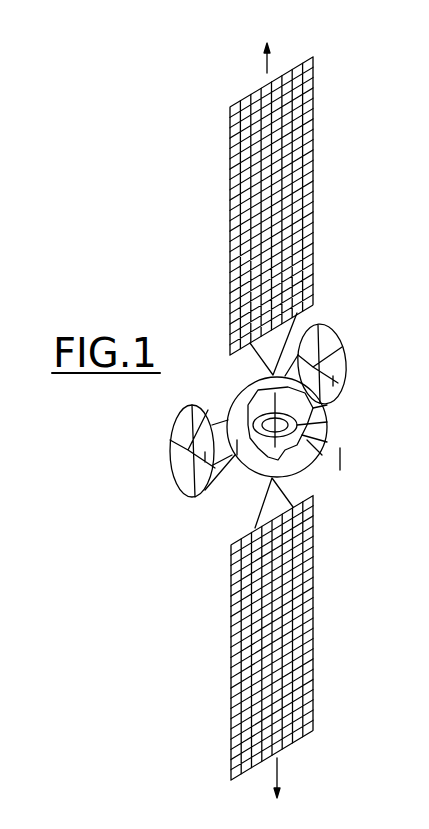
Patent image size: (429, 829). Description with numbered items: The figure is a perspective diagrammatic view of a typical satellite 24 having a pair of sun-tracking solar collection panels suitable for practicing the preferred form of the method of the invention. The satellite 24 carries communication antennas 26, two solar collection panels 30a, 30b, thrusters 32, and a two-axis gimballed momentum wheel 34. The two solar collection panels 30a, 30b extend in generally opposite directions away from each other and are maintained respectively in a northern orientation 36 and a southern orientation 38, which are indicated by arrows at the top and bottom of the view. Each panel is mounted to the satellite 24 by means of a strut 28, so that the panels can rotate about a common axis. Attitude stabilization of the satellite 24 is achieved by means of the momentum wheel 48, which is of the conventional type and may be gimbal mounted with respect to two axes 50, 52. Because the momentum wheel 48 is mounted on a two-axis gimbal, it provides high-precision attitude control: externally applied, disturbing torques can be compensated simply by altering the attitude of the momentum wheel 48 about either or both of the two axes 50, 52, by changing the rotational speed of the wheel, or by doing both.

The satellite 24 is at (174, 291).
The communication antennas 26 is at (346, 358).
The strut 28 is at (293, 322).
The solar collection panel 30a is at (315, 281).
The solar collection panel 30b is at (313, 552).
The thrusters 32 is at (229, 401).
The two-axis gimballed momentum wheel 34 is at (313, 425).
The northern orientation 36 is at (265, 58).
The southern orientation 38 is at (280, 762).
The momentum wheel 48 is at (266, 460).
The gimbal axis 50 is at (310, 443).
The gimbal axis 52 is at (320, 413).